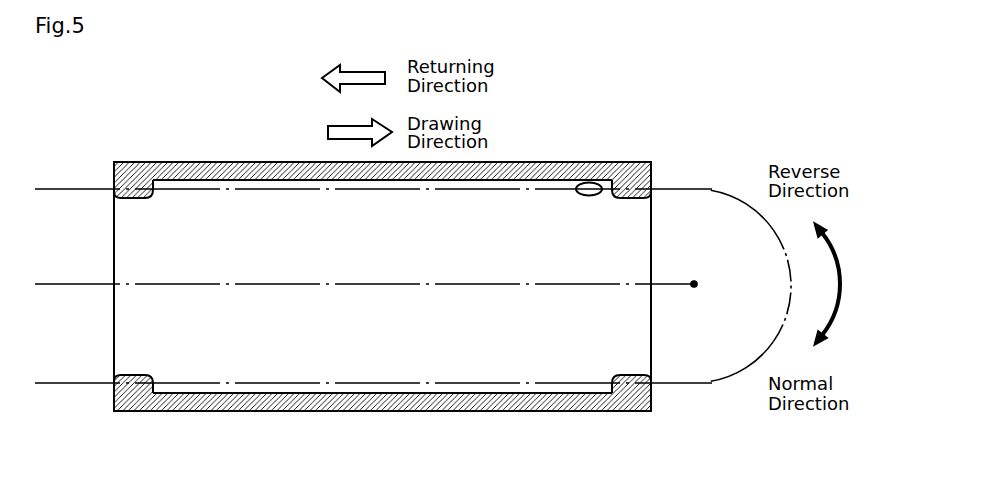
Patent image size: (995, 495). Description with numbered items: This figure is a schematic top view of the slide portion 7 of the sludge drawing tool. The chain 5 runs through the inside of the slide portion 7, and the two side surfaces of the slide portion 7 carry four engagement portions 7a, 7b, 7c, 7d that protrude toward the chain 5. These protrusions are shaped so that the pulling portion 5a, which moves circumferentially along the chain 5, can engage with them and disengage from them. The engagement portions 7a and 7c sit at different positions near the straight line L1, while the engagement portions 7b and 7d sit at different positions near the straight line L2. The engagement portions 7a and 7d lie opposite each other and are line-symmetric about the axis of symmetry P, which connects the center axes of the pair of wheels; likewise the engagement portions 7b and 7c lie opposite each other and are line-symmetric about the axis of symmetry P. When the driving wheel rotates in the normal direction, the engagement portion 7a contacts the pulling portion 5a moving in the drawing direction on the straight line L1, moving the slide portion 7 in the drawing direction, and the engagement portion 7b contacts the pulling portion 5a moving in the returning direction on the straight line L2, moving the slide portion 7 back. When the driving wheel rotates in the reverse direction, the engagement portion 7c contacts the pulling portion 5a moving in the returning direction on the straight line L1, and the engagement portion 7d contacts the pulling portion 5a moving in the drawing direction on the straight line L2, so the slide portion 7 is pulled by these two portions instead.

The slide portion 7 is at (392, 266).
The engagement portion 7a is at (622, 180).
The engagement portion 7b is at (145, 386).
The engagement portion 7c is at (128, 172).
The engagement portion 7d is at (622, 386).
The chain 5 is at (708, 186).
The pulling portion 5a is at (588, 183).
The straight line L1 is at (333, 189).
The straight line L2 is at (332, 383).
The axis of symmetry P is at (542, 284).